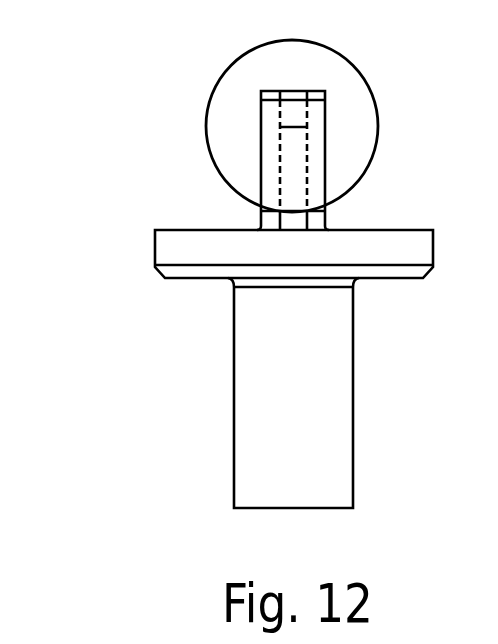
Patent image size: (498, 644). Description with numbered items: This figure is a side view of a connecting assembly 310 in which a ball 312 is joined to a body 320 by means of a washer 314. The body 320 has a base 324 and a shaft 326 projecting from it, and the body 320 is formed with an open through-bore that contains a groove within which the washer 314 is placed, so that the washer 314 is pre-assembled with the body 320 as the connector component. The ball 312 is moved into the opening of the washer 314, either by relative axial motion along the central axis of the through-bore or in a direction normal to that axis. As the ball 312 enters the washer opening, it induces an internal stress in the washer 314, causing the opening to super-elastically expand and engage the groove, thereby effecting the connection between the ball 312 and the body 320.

The connecting assembly 310 is at (132, 54).
The ball 312 is at (347, 82).
The washer 314 is at (290, 172).
The body 320 is at (270, 140).
The base 324 is at (203, 255).
The shaft 326 is at (257, 385).